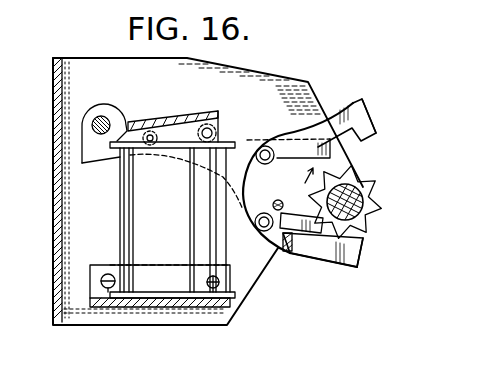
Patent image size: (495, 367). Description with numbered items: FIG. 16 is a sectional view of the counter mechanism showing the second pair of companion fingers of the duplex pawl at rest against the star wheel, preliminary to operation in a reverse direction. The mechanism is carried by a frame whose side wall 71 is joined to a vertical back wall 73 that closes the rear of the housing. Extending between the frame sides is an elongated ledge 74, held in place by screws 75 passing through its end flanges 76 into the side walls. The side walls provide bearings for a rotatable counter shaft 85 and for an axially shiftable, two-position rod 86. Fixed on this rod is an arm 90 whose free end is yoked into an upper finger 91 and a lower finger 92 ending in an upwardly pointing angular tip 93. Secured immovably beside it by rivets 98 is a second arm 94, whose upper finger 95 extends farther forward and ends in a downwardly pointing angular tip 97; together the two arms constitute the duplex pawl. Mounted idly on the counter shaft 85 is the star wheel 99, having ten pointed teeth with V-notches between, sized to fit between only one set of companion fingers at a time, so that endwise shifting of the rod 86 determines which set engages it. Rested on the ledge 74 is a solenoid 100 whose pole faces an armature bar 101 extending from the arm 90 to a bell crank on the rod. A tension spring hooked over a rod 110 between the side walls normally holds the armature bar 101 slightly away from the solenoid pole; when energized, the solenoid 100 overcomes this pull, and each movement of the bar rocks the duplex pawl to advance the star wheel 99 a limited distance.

The frame side wall 71 is at (297, 80).
The vertical back wall 73 is at (53, 284).
The elongated ledge 74 is at (171, 305).
The screws 75 is at (108, 272).
The end flanges 76 is at (91, 294).
The counter shaft 85 is at (368, 188).
The two-position rod 86 is at (103, 116).
The arm 90 is at (270, 138).
The upper finger 91 is at (300, 138).
The lower finger 92 is at (345, 262).
The angular tip 93 is at (362, 247).
The second arm 94 is at (242, 182).
The upper finger 95 is at (340, 112).
The angular tip 97 is at (392, 129).
The rivets 98 is at (293, 189).
The star wheel 99 is at (377, 199).
The solenoid 100 is at (123, 216).
The armature bar 101 is at (170, 120).
The rod 110 is at (283, 249).